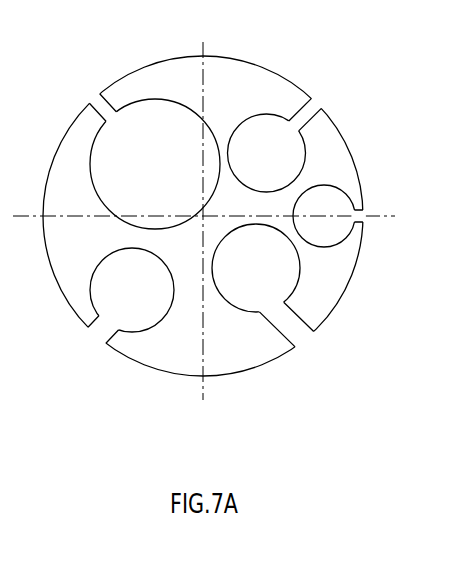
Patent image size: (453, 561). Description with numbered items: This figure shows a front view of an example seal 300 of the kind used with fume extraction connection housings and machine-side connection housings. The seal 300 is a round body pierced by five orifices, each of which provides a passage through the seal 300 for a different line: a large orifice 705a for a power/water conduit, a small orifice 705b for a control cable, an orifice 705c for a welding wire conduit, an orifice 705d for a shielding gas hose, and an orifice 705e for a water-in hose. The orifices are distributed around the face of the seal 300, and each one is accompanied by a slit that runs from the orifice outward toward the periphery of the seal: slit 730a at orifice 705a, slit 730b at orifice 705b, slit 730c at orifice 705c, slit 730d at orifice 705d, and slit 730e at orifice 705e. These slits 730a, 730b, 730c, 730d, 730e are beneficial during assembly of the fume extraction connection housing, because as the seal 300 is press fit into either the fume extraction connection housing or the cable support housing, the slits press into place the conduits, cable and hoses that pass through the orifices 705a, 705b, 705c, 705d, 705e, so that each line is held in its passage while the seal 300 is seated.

The seal 300 is at (268, 70).
The orifice 705a is at (128, 105).
The orifice 705b is at (351, 228).
The orifice 705c is at (296, 348).
The orifice 705d is at (309, 124).
The orifice 705e is at (103, 322).
The slit 730a is at (90, 102).
The slit 730b is at (363, 214).
The slit 730c is at (315, 331).
The slit 730d is at (314, 101).
The slit 730e is at (88, 328).